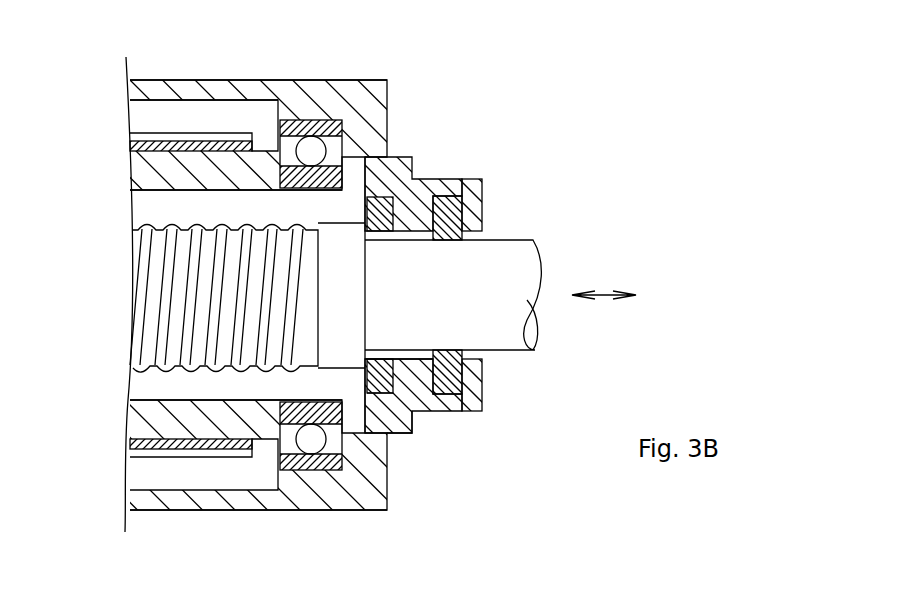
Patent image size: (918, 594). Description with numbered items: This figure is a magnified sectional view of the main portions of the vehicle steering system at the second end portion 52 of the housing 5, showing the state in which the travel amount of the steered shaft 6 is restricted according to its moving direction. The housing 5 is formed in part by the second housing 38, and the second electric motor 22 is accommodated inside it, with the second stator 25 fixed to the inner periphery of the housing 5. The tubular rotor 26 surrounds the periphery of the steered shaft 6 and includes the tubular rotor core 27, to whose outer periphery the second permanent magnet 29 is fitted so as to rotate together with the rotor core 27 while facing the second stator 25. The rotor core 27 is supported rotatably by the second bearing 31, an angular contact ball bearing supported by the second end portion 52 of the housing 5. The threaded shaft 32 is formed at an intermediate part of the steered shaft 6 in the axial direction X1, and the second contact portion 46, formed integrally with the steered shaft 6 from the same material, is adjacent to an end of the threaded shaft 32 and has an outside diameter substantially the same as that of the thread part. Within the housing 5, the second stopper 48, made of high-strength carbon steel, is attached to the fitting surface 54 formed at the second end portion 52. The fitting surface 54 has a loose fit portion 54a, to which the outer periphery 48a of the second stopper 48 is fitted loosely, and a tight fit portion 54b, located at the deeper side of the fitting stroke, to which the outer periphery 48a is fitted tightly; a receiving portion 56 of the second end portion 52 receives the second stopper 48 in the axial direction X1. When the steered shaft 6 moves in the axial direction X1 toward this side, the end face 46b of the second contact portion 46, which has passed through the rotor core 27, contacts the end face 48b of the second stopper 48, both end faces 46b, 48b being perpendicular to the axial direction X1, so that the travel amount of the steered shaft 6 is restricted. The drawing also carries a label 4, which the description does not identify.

The housing 4 is at (225, 95).
The housing 5 is at (258, 80).
The second electric motor 22 is at (162, 100).
The second stator 25 is at (192, 110).
The rotor 26 is at (133, 165).
The rotor core 27 is at (140, 178).
The second permanent magnet 29 is at (148, 143).
The second bearing 31 is at (310, 150).
The threaded shaft 32 is at (137, 293).
The second housing 38 is at (175, 505).
The steered shaft 6 is at (520, 238).
The second contact portion 46 is at (357, 395).
The end face 46b is at (413, 416).
The second stopper 48 is at (380, 228).
The outer periphery 48a is at (375, 402).
The end face 48b is at (370, 364).
The second end portion 52 is at (473, 180).
The fitting surface 54 is at (508, 72).
The loose fit portion 54a is at (400, 207).
The tight fit portion 54b is at (437, 200).
The receiving portion 56 is at (392, 360).
The axial direction X1 is at (603, 297).